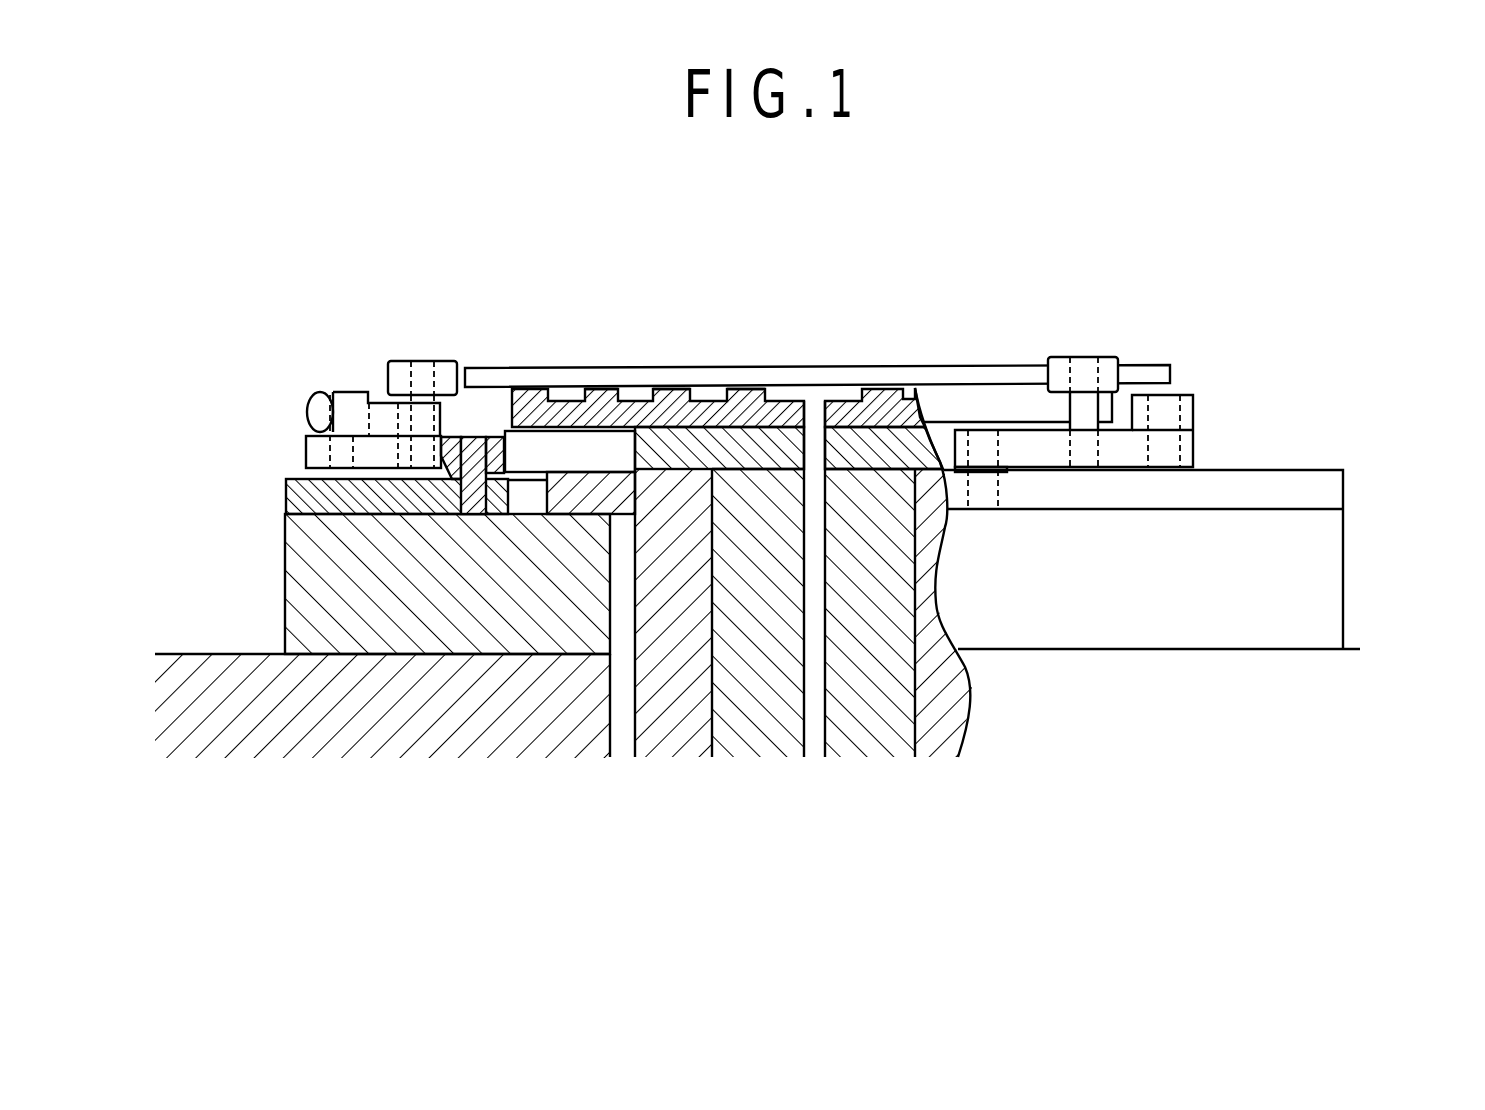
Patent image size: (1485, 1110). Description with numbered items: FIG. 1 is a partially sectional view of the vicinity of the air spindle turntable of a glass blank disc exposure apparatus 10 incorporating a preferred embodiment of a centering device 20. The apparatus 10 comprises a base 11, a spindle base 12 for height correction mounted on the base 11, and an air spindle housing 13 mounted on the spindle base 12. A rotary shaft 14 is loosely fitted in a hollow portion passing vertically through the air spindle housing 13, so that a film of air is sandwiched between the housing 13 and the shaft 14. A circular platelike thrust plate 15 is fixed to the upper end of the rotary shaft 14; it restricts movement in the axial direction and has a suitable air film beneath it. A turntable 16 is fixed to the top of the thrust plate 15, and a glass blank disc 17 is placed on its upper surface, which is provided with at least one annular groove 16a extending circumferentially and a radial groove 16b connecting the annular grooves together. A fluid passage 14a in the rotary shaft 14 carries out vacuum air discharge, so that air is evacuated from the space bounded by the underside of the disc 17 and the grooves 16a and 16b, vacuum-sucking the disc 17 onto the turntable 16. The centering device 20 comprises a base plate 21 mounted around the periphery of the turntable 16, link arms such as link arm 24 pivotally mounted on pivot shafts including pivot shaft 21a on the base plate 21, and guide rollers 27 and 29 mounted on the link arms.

The glass blank disc exposure apparatus 10 is at (1185, 332).
The base 11 is at (350, 713).
The spindle base 12 is at (322, 587).
The air spindle housing 13 is at (663, 742).
The rotary shaft 14 is at (748, 742).
The fluid passage 14a is at (815, 743).
The thrust plate 15 is at (885, 445).
The turntable 16 is at (718, 336).
The annular groove 16a is at (707, 390).
The radial groove 16b is at (678, 389).
The glass blank disc 17 is at (987, 367).
The centering device 20 is at (371, 329).
The base plate 21 is at (290, 496).
The pivot shaft 21a is at (478, 437).
The link arm 24 is at (1137, 450).
The guide roller 27 is at (398, 360).
The guide roller 29 is at (1082, 358).